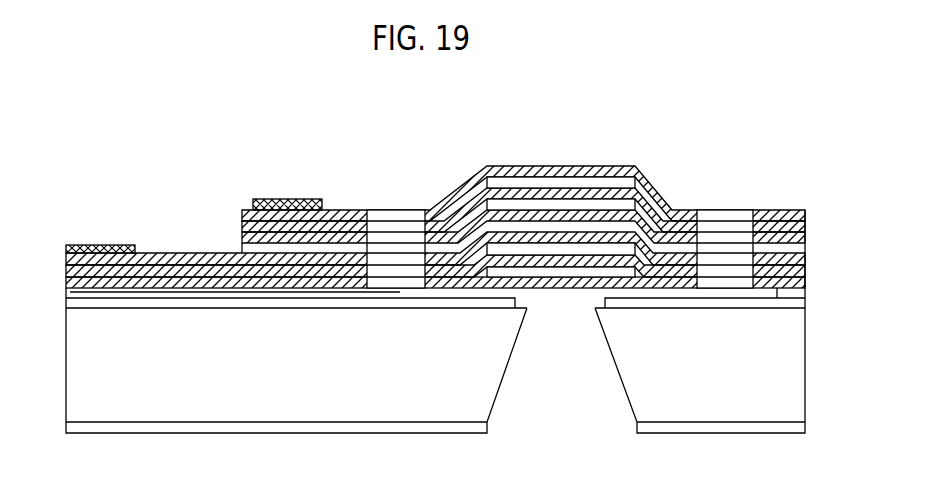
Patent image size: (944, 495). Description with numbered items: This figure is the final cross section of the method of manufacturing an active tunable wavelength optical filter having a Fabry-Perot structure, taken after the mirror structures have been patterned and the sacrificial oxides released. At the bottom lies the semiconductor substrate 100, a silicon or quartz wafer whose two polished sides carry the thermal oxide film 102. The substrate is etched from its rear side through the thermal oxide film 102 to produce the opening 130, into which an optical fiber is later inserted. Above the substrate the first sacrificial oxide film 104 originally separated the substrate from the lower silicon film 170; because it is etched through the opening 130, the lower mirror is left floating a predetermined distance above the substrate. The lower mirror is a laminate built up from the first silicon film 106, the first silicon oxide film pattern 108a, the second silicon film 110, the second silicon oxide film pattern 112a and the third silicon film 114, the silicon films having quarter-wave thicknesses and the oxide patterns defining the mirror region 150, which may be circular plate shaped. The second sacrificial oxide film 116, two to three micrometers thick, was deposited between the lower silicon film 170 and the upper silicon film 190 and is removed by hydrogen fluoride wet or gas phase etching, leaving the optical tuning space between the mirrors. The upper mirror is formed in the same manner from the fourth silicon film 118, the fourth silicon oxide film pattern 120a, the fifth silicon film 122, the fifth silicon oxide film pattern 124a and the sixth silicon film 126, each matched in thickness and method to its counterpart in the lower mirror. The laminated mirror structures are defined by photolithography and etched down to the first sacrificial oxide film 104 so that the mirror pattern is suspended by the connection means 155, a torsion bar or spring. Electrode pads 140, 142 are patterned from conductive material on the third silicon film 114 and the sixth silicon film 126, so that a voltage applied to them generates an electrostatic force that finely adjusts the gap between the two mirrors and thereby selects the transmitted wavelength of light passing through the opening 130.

The semiconductor substrate 100 is at (806, 358).
The thermal oxide film 102 is at (806, 428).
The first sacrificial oxide film 104 is at (66, 291).
The first silicon film 106 is at (805, 283).
The first silicon oxide film pattern 108a is at (497, 270).
The second silicon film 110 is at (805, 270).
The second silicon oxide film pattern 112a is at (538, 248).
The third silicon film 114 is at (805, 259).
The second sacrificial oxide film 116 is at (324, 247).
The fourth silicon film 118 is at (805, 241).
The fourth silicon oxide film pattern 120a is at (623, 207).
The fifth silicon film 122 is at (805, 228).
The fifth silicon oxide film pattern 124a is at (475, 180).
The sixth silicon film 126 is at (805, 217).
The opening 130 is at (574, 372).
The electrode pad 140 is at (118, 244).
The electrode pad 142 is at (270, 198).
The mirror region 150 is at (635, 152).
The connection means 155 is at (721, 211).
The lower silicon film 170 is at (862, 238).
The upper silicon film 190 is at (862, 156).